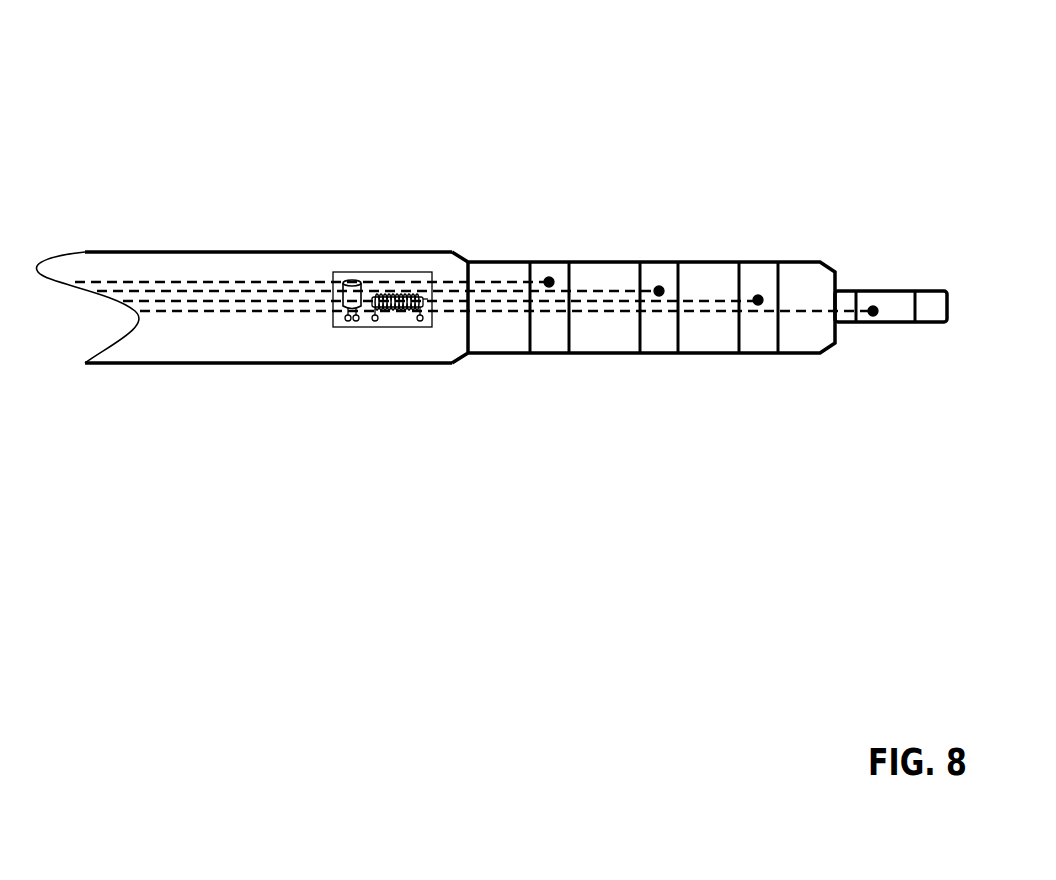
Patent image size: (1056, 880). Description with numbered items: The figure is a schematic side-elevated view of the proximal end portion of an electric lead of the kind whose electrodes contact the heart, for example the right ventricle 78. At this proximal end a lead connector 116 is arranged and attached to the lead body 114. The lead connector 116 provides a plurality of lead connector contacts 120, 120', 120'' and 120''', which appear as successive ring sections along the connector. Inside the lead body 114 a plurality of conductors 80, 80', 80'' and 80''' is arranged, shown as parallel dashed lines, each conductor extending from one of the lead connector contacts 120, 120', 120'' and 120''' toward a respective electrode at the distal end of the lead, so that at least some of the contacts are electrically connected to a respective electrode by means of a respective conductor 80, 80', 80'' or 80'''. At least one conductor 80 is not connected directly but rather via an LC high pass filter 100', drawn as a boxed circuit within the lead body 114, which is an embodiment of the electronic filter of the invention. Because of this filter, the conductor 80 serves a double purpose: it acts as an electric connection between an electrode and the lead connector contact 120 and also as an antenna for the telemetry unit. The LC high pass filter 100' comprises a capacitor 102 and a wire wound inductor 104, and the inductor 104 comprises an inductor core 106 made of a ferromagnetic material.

The right ventricle 78 is at (328, 222).
The LC high pass filter 100' is at (404, 230).
The conductor 80 is at (343, 170).
The conductor 80' is at (378, 372).
The conductor 80'' is at (429, 393).
The conductor 80''' is at (484, 413).
The lead connector contact 120 is at (611, 205).
The lead connector contact 120' is at (720, 205).
The lead connector contact 120'' is at (826, 205).
The lead connector contact 120''' is at (950, 190).
The capacitor 102 is at (347, 294).
The wire wound inductor 104 is at (393, 310).
The inductor core 106 is at (425, 300).
The lead body 114 is at (265, 363).
The lead connector 116 is at (602, 353).